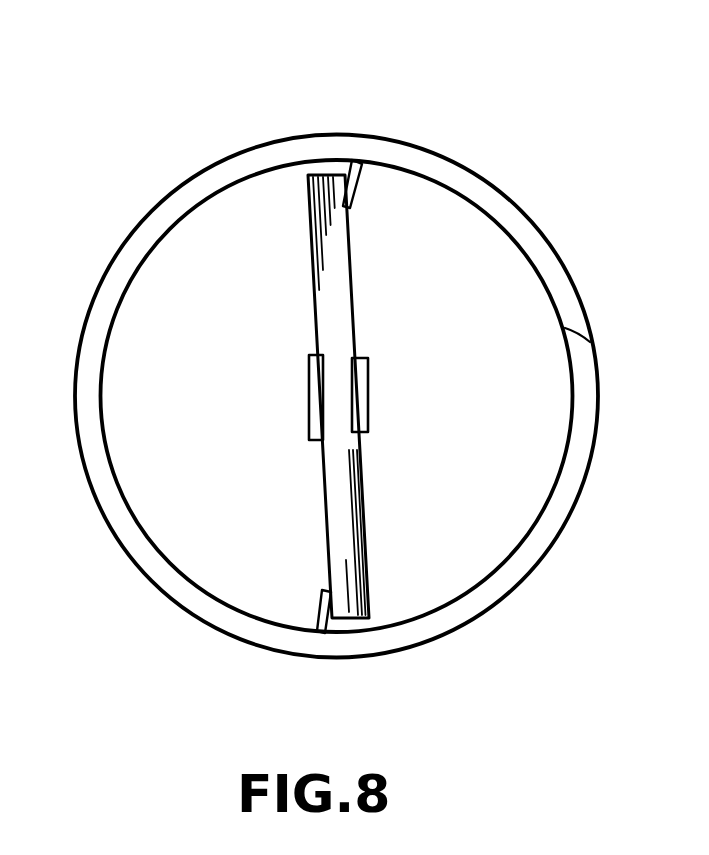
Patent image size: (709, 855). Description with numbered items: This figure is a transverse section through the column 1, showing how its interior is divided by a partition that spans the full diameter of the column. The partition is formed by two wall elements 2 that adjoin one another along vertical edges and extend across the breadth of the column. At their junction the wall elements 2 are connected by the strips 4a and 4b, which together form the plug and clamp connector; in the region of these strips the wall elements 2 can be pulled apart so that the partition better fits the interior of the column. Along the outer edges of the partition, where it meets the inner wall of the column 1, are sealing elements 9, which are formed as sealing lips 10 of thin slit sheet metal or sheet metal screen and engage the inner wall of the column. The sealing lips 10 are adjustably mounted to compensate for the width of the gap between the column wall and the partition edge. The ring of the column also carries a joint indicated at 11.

The column 1 is at (462, 173).
The ring joint 11 is at (590, 342).
The wall element 2 is at (333, 295).
The strip 4a is at (368, 395).
The strip 4b is at (352, 395).
The sealing element 9 is at (350, 163).
The sealing lip 10 is at (329, 634).